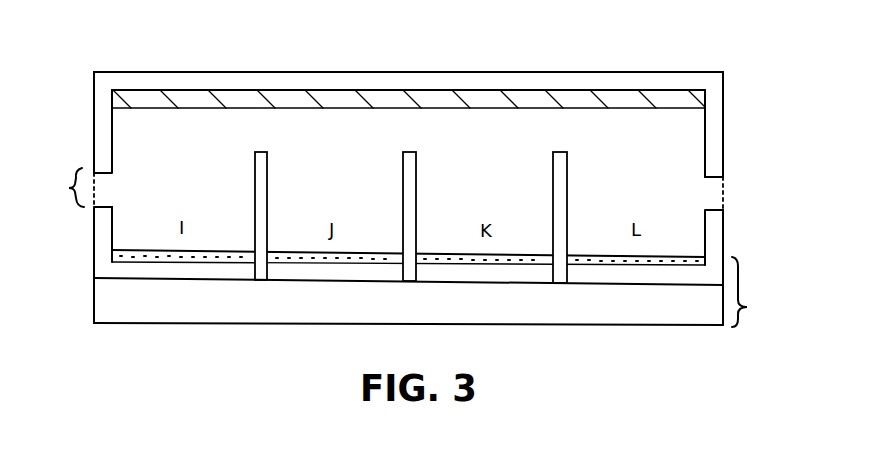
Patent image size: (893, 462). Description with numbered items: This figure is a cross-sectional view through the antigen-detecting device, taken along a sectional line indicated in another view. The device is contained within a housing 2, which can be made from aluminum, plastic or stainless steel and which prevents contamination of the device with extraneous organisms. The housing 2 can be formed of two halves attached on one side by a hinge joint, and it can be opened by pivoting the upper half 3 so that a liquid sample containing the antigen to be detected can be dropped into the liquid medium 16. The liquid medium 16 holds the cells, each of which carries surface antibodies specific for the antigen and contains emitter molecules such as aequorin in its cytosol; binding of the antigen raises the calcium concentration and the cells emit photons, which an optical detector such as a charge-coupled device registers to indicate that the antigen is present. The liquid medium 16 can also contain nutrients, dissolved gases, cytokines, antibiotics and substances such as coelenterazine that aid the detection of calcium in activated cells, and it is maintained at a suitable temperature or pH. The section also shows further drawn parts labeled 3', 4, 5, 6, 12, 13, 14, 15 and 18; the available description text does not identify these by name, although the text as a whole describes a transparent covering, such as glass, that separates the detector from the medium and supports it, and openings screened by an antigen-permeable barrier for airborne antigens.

The housing 2 is at (636, 84).
The upper half 3 is at (735, 133).
The side wall lower portion 3' is at (740, 251).
The gap 4 is at (63, 189).
The slot opening 5 is at (93, 190).
The bottom assembly 6 is at (753, 292).
The particle layer 12 is at (358, 257).
The base plate 13 is at (158, 288).
The support plate 14 is at (130, 263).
The top lining layer 15 is at (465, 97).
The liquid medium 16 is at (283, 253).
The interior chamber 18 is at (300, 125).